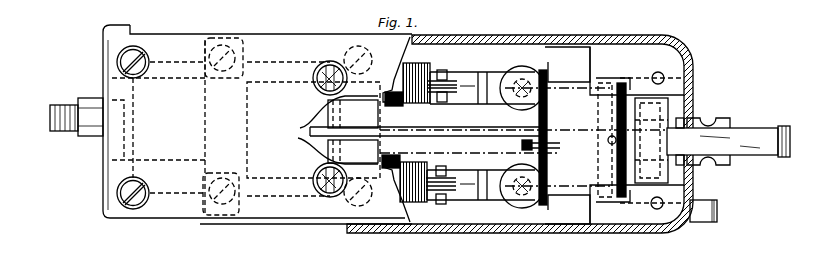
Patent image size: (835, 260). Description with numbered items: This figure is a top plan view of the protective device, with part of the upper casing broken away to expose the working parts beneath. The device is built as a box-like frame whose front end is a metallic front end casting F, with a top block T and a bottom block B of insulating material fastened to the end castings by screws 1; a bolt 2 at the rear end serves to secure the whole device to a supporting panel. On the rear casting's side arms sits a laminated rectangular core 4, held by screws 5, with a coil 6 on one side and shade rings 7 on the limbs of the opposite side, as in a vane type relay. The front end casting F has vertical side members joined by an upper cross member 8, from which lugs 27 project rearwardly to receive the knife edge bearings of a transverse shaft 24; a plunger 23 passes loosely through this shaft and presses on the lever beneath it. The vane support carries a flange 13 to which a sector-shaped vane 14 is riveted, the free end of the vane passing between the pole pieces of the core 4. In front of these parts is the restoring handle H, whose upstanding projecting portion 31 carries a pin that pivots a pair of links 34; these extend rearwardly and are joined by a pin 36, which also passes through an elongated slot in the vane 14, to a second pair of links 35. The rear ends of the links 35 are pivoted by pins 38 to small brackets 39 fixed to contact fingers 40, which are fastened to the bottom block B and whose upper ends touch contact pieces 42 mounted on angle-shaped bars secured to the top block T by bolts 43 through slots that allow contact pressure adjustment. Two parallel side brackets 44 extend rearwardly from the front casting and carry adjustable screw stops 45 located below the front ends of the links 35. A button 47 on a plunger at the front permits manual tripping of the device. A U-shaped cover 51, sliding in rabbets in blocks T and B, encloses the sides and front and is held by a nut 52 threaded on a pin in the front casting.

The screws 1 is at (118, 61).
The bolt 2 is at (62, 106).
The core 4 is at (271, 192).
The screws 5 is at (222, 46).
The coil 6 is at (252, 172).
The shade rings 7 is at (338, 130).
The upper cross member 8 is at (642, 130).
The flange 13 is at (522, 146).
The vane 14 is at (505, 137).
The plunger 23 is at (608, 142).
The shaft 24 is at (612, 100).
The lugs 27 is at (672, 68).
The upstanding projecting portion 31 is at (692, 118).
The links 34 is at (600, 95).
The links 35 is at (487, 96).
The pin 36 is at (547, 112).
The pins 38 is at (480, 72).
The brackets 39 is at (428, 100).
The contact fingers 40 is at (440, 72).
The contact pieces 42 is at (397, 105).
The bolts 43 is at (328, 94).
The side brackets 44 is at (567, 135).
The screw stops 45 is at (522, 97).
The button 47 is at (702, 223).
The cover 51 is at (540, 37).
The nut 52 is at (722, 120).
The bottom block B is at (508, 224).
The front end casting F is at (688, 76).
The restoring handle H is at (759, 136).
The top block T is at (257, 124).